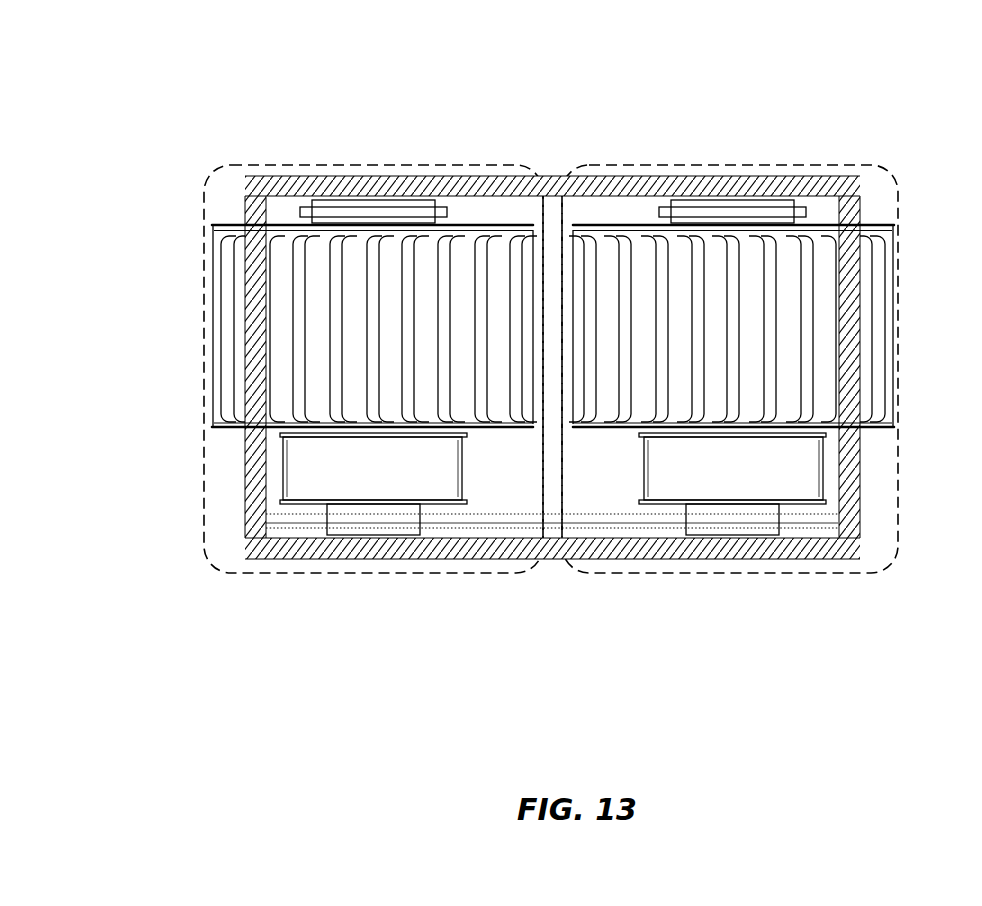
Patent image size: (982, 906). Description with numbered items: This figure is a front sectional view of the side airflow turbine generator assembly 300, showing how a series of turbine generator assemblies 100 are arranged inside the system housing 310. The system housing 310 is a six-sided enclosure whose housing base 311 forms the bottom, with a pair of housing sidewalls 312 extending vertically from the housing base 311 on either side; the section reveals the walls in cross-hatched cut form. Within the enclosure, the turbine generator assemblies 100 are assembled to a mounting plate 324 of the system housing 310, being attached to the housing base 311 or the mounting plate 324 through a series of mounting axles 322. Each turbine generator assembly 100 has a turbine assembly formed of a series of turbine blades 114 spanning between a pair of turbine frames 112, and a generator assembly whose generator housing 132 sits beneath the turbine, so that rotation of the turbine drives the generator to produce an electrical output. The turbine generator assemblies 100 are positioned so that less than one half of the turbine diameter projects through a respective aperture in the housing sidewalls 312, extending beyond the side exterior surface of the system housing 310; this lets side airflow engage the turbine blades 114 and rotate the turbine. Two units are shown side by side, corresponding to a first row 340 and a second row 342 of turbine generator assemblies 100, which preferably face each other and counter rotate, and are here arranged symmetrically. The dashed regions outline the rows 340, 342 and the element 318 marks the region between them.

The side airflow turbine generator assembly 300 is at (212, 88).
The system housing 310 is at (866, 570).
The housing base 311 is at (657, 542).
The housing sidewalls 312 is at (245, 475).
The partition gap 318 is at (553, 178).
The mounting axles 322 is at (376, 508).
The mounting plate 324 is at (565, 518).
The first row 340 is at (729, 165).
The second row 342 is at (376, 165).
The turbine generator assembly 100 is at (225, 208).
The turbine frames 112 is at (213, 430).
The turbine blades 114 is at (213, 317).
The generator housing 132 is at (462, 467).